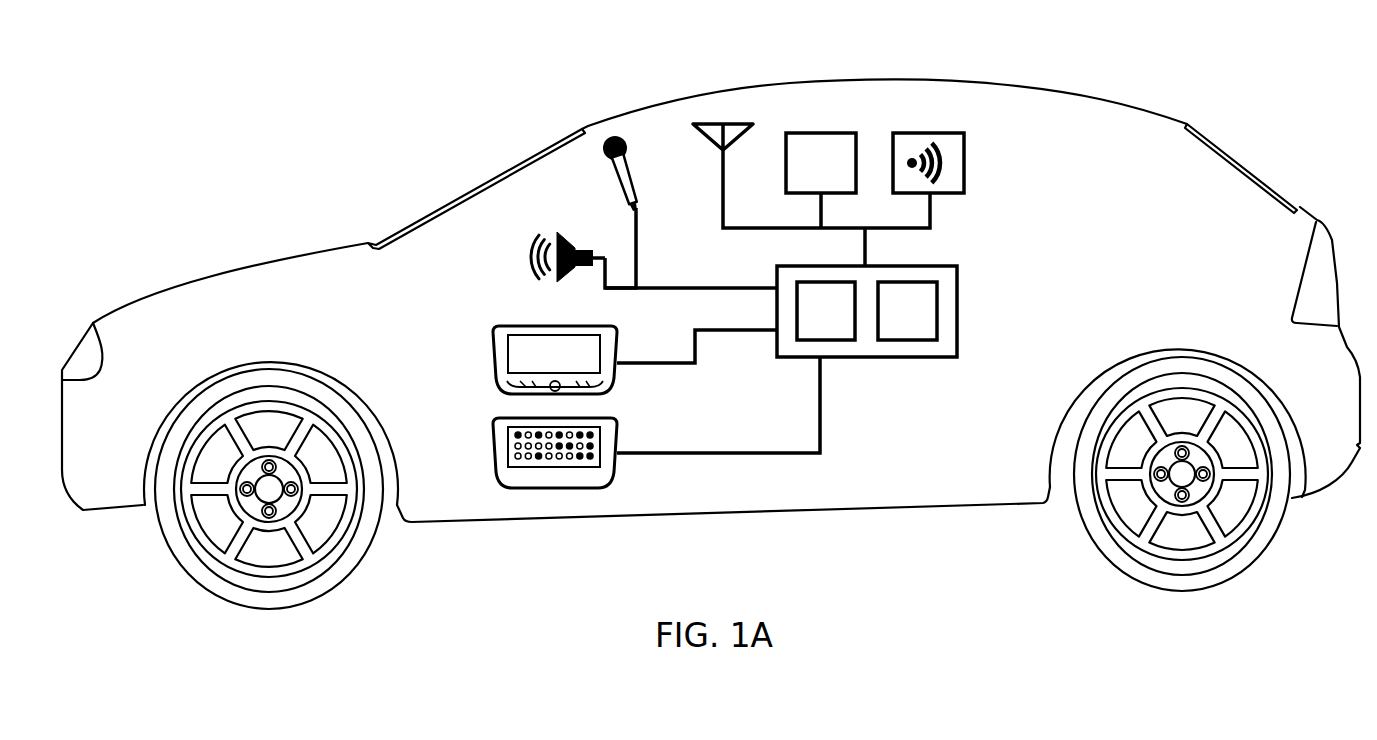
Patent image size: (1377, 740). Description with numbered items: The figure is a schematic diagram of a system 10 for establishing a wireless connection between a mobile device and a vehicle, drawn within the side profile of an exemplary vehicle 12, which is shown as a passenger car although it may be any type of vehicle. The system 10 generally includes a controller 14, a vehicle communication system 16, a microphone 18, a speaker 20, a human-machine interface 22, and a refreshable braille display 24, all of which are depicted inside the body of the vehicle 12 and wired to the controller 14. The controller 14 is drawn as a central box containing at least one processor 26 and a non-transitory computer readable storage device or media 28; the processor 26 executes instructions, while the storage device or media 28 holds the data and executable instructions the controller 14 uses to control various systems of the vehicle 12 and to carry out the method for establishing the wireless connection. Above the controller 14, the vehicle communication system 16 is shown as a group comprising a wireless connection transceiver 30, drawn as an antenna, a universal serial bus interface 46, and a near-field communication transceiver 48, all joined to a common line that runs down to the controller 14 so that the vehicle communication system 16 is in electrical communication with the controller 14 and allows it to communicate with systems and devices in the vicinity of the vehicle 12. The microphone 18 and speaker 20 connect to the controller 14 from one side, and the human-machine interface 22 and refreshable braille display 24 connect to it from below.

The system 10 is at (430, 184).
The vehicle 12 is at (1088, 93).
The controller 14 is at (957, 356).
The vehicle communication system 16 is at (966, 216).
The microphone 18 is at (618, 170).
The speaker 20 is at (562, 280).
The human-machine interface (HMI) 22 is at (493, 343).
The refreshable braille display (RBD) 24 is at (493, 434).
The processor 26 is at (813, 324).
The non-transitory computer readable storage device or media 28 is at (894, 324).
The wireless connection transceiver 30 is at (712, 145).
The universal serial bus (USB) interface 46 is at (808, 176).
The near-field communication (NFC) transceiver 48 is at (964, 147).